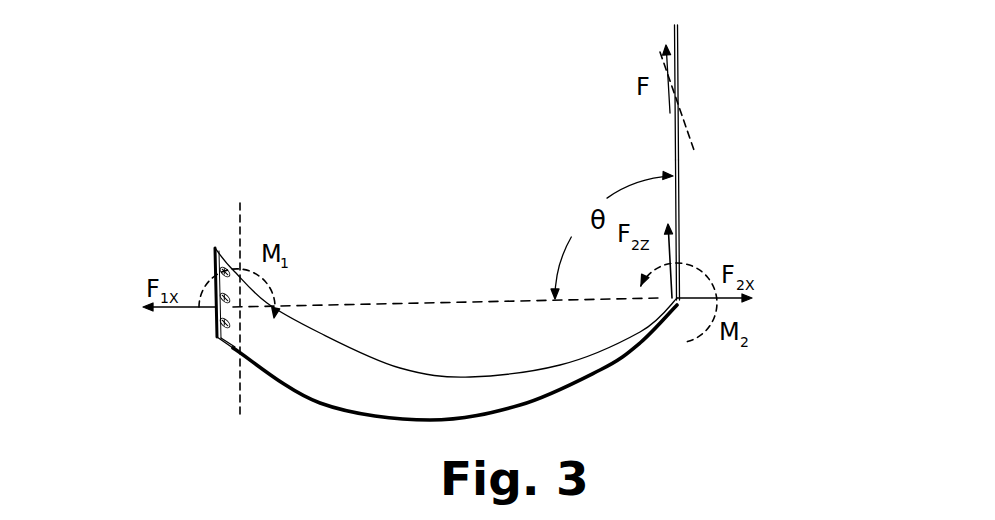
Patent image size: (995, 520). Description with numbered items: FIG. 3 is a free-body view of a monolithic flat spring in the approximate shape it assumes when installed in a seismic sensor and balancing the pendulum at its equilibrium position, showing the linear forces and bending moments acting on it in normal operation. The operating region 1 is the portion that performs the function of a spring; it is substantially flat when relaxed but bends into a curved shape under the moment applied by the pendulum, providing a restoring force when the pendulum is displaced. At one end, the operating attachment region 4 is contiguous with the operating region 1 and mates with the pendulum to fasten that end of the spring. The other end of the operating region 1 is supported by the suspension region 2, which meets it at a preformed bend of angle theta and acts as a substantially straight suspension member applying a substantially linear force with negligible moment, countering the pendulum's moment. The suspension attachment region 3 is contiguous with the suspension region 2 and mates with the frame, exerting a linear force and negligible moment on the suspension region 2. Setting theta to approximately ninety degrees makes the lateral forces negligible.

The operating region 1 is at (408, 430).
The suspension region 2 is at (713, 215).
The suspension attachment region 3 is at (716, 69).
The operating attachment region 4 is at (227, 230).